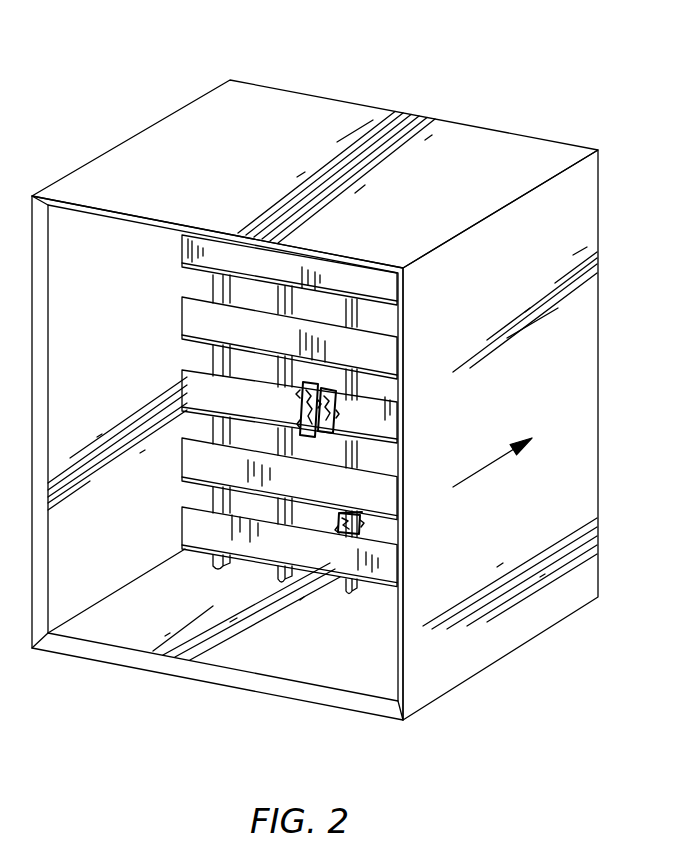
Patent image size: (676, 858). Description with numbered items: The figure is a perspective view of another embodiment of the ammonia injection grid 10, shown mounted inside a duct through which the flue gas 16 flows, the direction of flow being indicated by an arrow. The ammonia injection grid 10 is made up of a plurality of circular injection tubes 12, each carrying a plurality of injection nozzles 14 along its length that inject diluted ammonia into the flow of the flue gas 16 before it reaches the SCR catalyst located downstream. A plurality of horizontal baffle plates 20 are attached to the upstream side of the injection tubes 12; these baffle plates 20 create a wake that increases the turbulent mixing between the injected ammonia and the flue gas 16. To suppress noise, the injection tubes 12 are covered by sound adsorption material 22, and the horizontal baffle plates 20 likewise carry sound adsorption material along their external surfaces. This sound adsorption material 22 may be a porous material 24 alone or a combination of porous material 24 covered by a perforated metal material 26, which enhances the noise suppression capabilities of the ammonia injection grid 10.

The ammonia injection grid 10 is at (315, 374).
The circular injection tubes 12 is at (320, 406).
The injection nozzles 14 is at (217, 290).
The flue gas 16 is at (487, 472).
The horizontal baffle plates 20 is at (193, 323).
The sound adsorption material 22 is at (490, 300).
The porous material 24 is at (335, 384).
The perforated metal material 26 is at (337, 392).